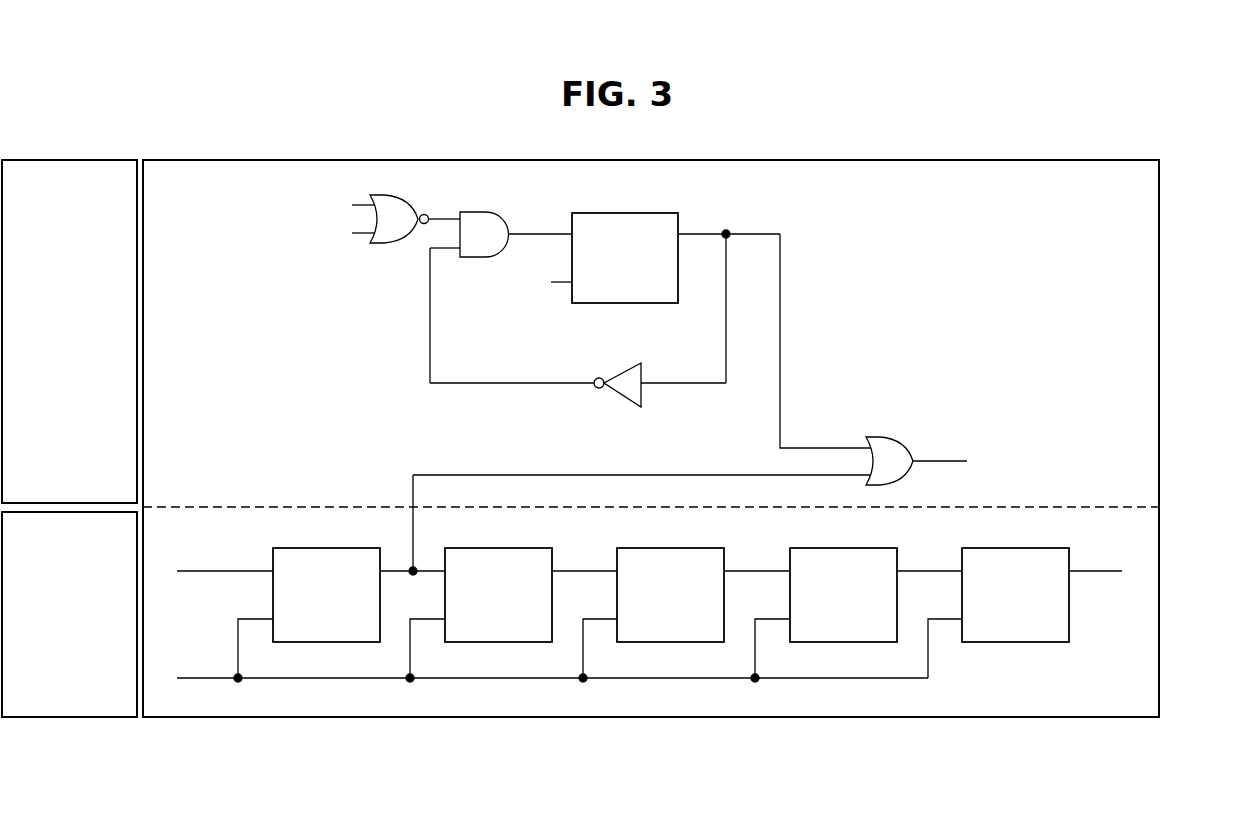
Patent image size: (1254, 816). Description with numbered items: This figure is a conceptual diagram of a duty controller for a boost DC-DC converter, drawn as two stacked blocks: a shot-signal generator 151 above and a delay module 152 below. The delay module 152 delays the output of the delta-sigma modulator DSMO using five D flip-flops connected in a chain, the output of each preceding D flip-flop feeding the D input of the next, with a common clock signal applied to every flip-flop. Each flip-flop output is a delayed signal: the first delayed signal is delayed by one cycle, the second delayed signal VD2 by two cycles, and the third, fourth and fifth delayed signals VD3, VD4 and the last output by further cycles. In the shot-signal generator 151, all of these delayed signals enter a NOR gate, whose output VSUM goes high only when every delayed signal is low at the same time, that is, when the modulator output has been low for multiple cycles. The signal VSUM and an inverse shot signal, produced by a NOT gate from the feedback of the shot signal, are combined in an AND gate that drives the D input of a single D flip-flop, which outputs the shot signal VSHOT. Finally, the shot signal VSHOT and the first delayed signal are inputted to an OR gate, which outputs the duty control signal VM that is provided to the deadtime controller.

The shot-signal generator 151 is at (1160, 328).
The delay module 152 is at (1160, 598).
The second delayed signal VD2 is at (584, 557).
The third delayed signal VD3 is at (757, 557).
The fourth delayed signal VD4 is at (929, 557).
The high signal output by the NOR gate VSUM is at (438, 199).
The shot signal VSHOT is at (825, 341).
The duty control signal VM is at (954, 463).
The output of the delta-sigma modulator DSMO is at (225, 559).